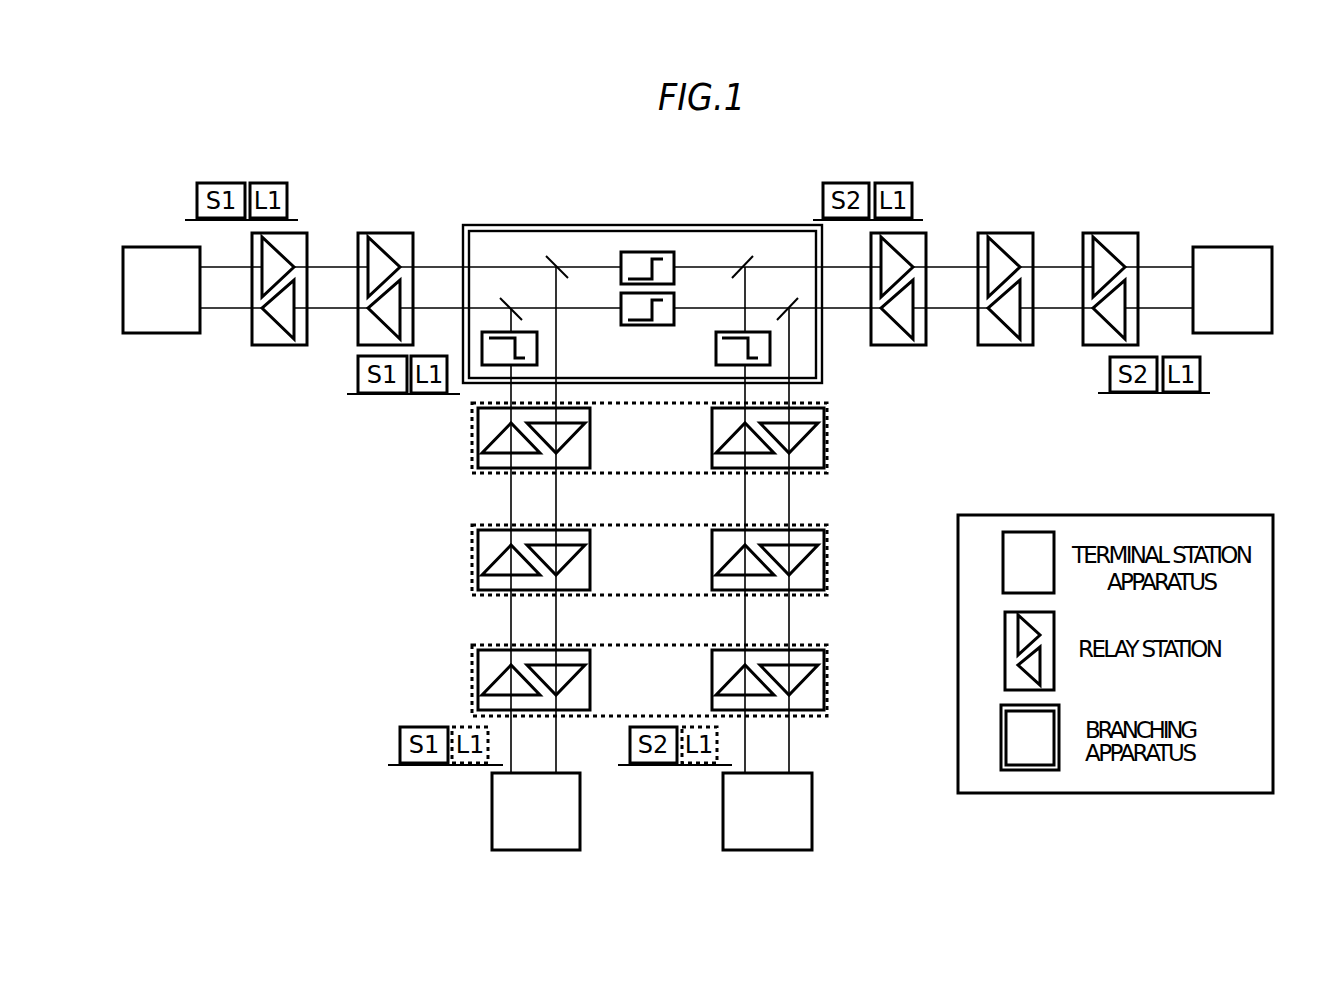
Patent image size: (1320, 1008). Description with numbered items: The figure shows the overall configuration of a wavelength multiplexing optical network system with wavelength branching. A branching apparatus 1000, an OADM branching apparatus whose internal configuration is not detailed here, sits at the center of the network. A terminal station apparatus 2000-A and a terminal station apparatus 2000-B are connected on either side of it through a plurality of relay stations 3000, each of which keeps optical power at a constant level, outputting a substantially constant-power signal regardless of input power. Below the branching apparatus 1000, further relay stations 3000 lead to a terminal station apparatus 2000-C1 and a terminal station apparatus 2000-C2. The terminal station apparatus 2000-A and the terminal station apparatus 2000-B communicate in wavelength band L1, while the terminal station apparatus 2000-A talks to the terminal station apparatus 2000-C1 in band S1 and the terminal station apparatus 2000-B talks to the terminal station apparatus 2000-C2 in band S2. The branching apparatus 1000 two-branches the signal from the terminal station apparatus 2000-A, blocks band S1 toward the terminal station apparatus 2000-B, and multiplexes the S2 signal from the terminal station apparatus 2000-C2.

The branching apparatus 1000 is at (632, 225).
The relay station 3000 is at (393, 233).
The terminal station apparatus 2000-A is at (155, 333).
The terminal station apparatus 2000-B is at (1218, 247).
The terminal station apparatus 2000-C1 is at (492, 815).
The terminal station apparatus 2000-C2 is at (812, 822).